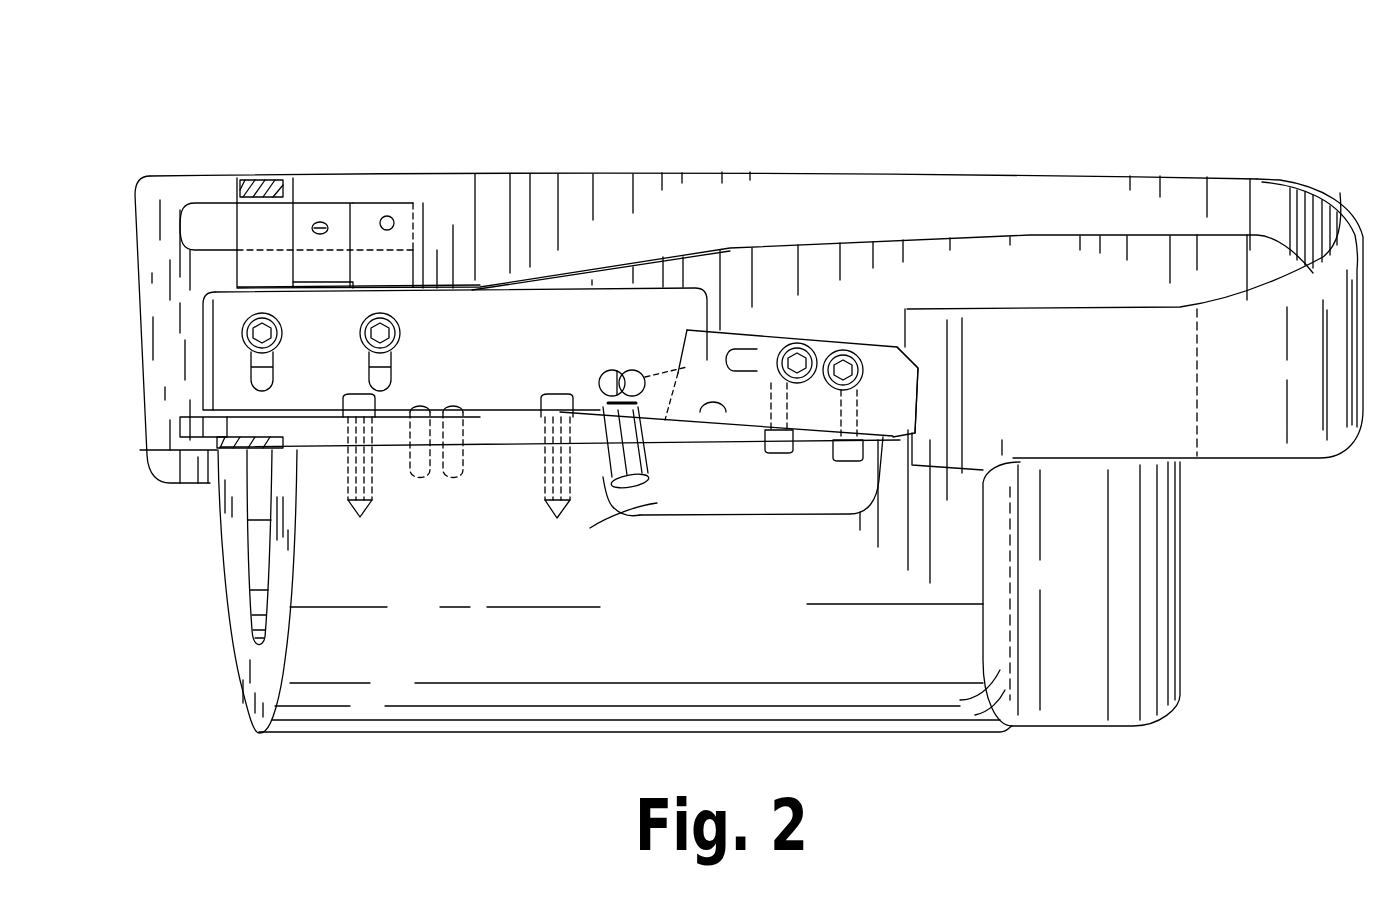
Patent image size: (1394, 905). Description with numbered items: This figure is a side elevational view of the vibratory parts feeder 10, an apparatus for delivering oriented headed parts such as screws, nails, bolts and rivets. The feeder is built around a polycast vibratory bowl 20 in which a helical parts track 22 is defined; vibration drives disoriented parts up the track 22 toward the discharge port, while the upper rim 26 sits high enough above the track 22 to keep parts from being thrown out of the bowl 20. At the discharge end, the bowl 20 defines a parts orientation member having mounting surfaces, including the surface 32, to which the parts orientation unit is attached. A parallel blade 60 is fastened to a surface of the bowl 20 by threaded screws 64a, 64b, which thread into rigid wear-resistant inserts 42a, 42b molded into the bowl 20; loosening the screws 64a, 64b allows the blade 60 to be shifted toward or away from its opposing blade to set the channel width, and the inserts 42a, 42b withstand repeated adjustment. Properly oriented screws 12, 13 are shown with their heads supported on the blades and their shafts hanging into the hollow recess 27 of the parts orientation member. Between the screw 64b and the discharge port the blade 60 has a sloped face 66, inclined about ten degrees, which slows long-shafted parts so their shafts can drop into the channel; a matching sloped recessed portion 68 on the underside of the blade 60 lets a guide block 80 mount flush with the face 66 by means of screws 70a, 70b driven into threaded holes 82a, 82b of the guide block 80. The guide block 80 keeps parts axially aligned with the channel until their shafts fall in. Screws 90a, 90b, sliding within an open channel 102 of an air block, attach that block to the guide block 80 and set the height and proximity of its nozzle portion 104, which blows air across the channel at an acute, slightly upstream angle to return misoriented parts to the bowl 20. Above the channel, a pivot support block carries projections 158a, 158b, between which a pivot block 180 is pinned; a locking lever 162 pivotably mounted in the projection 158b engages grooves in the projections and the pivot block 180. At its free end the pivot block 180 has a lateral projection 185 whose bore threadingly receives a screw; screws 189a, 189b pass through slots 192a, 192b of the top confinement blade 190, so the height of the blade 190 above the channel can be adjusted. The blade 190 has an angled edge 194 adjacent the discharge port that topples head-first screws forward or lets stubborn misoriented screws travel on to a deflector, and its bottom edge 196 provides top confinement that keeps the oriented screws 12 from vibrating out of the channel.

The vibratory parts feeder 10 is at (1060, 70).
The oriented screw 12 is at (410, 480).
The oriented screw 13 is at (437, 480).
The vibratory bowl 20 is at (1360, 387).
The helical parts track 22 is at (1262, 198).
The upper rim 26 is at (1340, 205).
The hollow recess 27 is at (257, 557).
The base plate 32 is at (632, 507).
The threaded insert 42a is at (362, 517).
The threaded insert 42b is at (550, 513).
The parallel blade 60 is at (250, 443).
The threaded screw 64a is at (348, 423).
The threaded screw 64b is at (545, 425).
The sloped face 66 is at (700, 508).
The recessed portion 68 is at (755, 432).
The screw 70a is at (797, 450).
The screw 70b is at (848, 462).
The guide block 80 is at (797, 363).
The threaded hole 82a is at (762, 425).
The threaded hole 82b is at (865, 418).
The screw 90a is at (834, 348).
The screw 90b is at (882, 376).
The open channel 102 is at (737, 355).
The nozzle portion 104 is at (642, 368).
The projection 158a is at (237, 263).
The projection 158b is at (410, 240).
The locking lever 162 is at (197, 218).
The pivot block 180 is at (340, 210).
The projection 185 is at (322, 222).
The screw 189a is at (262, 333).
The screw 189b is at (380, 333).
The top confinement blade 190 is at (515, 300).
The slot 192a is at (258, 375).
The slot 192b is at (383, 376).
The angled edge 194 is at (687, 362).
The bottom edge 196 is at (232, 413).